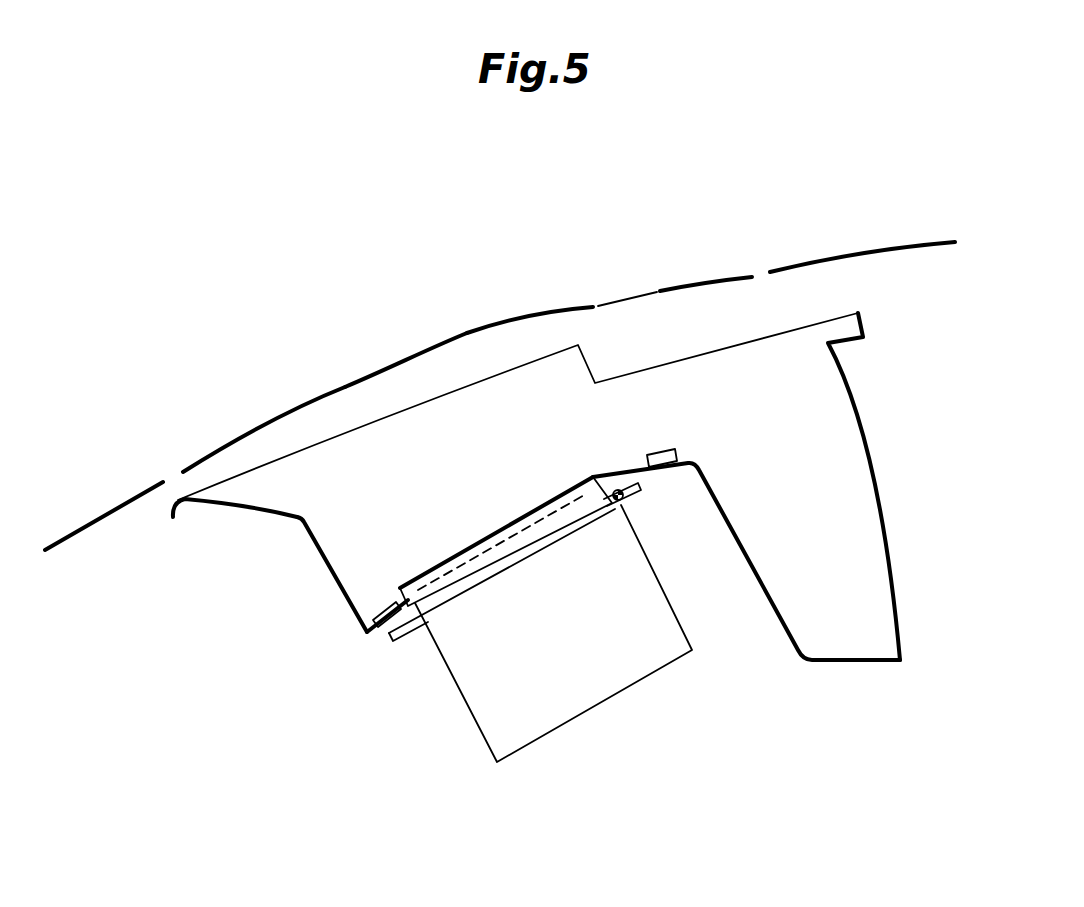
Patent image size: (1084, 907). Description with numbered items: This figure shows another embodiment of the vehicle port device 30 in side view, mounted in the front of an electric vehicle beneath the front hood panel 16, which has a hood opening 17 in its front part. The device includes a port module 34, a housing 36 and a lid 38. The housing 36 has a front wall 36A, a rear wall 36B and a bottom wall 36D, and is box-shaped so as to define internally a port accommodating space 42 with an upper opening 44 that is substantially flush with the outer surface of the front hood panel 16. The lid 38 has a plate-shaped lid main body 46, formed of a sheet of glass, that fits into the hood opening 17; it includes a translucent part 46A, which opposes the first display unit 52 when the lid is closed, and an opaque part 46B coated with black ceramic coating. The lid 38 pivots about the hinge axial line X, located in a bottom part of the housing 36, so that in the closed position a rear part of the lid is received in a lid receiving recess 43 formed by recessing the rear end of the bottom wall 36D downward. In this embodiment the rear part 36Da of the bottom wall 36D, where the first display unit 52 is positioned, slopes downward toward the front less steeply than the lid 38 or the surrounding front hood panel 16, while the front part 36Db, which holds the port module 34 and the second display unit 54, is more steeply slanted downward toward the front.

The front hood panel 16 is at (873, 250).
The hood opening 17 is at (765, 275).
The vehicle port device 30 is at (415, 264).
The port module 34 is at (468, 648).
The housing 36 is at (315, 547).
The front wall 36A is at (342, 573).
The rear wall 36B is at (845, 412).
The bottom wall 36D is at (605, 467).
The rear part of the bottom wall 36Da is at (623, 460).
The front part of the bottom wall 36Db is at (363, 620).
The lid 38 is at (467, 334).
The port accommodating space 42 is at (497, 511).
The lid receiving recess 43 is at (828, 534).
The upper opening 44 is at (548, 377).
The lid main body 46 is at (380, 365).
The translucent part 46A is at (633, 293).
The opaque part 46B is at (345, 384).
The first display unit 52 is at (674, 450).
The second display unit 54 is at (392, 600).
The hinge axial line X is at (627, 503).